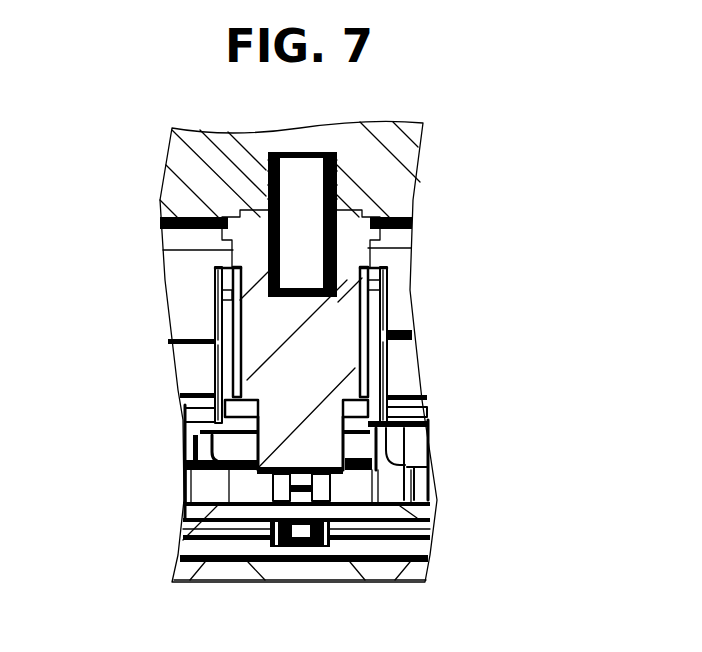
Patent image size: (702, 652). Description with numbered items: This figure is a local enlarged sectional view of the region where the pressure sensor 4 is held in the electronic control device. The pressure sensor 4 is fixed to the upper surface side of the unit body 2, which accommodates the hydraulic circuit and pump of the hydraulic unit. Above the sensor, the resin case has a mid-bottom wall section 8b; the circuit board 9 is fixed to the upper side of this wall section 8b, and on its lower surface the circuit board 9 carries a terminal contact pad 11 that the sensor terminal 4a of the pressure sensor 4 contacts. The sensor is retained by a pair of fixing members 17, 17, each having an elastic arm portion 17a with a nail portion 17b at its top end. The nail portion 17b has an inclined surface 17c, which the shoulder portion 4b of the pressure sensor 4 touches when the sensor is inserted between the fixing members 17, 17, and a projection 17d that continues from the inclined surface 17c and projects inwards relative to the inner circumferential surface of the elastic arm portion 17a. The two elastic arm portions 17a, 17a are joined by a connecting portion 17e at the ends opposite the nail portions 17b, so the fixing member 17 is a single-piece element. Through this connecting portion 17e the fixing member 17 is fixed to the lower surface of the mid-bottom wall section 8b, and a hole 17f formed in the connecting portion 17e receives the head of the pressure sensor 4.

The unit body 2 is at (427, 160).
The pressure sensor 4 is at (340, 237).
The sensor terminal 4a is at (280, 507).
The shoulder portion 4b is at (215, 393).
The mid-bottom wall section 8b is at (240, 448).
The circuit board 9 is at (222, 507).
The terminal contact pad 11 is at (287, 497).
The fixing member 17 is at (84, 317).
The elastic arm portion 17a is at (222, 353).
The nail portion 17b is at (222, 295).
The inclined surface 17c is at (233, 268).
The projection 17d is at (227, 297).
The connecting portion 17e is at (423, 432).
The hole 17f is at (387, 450).